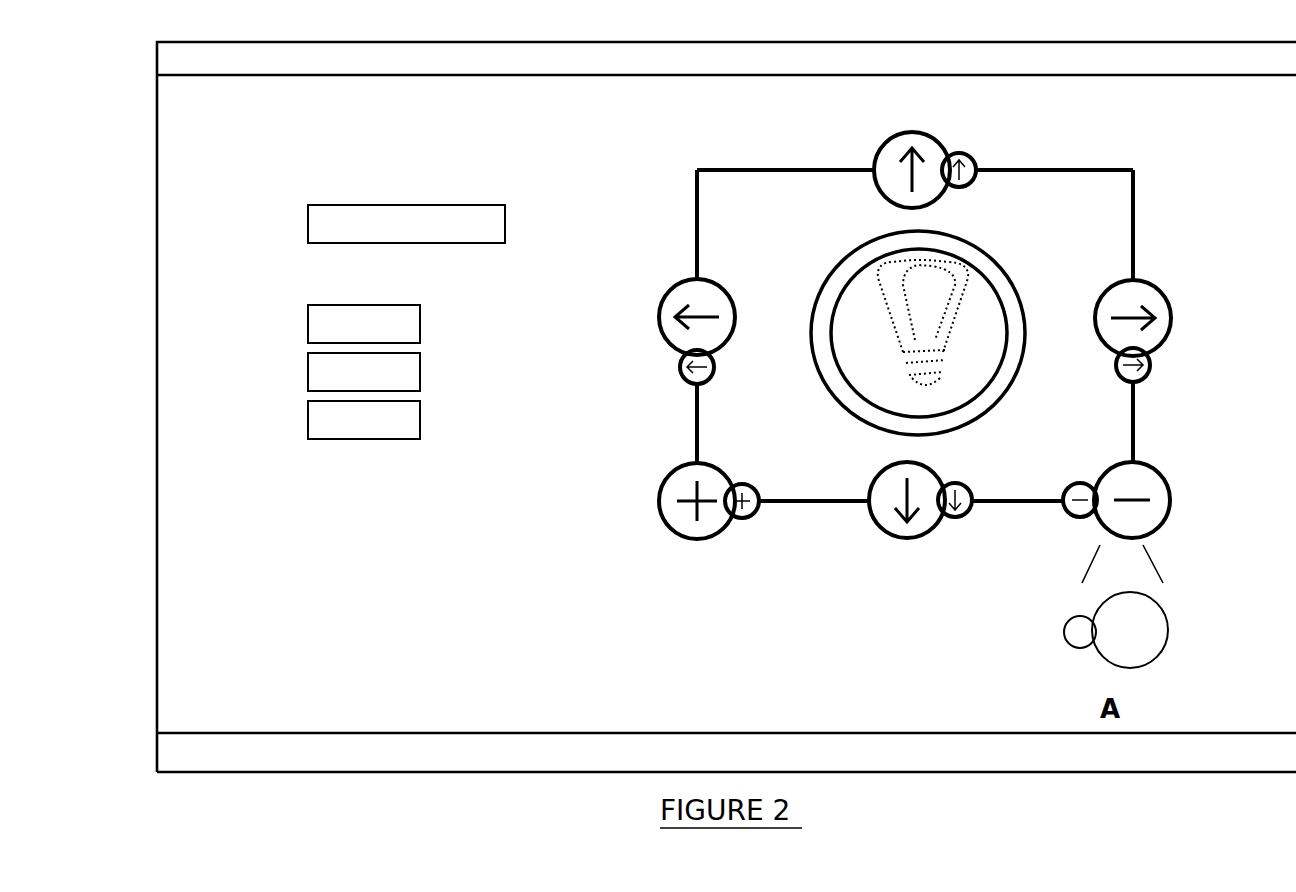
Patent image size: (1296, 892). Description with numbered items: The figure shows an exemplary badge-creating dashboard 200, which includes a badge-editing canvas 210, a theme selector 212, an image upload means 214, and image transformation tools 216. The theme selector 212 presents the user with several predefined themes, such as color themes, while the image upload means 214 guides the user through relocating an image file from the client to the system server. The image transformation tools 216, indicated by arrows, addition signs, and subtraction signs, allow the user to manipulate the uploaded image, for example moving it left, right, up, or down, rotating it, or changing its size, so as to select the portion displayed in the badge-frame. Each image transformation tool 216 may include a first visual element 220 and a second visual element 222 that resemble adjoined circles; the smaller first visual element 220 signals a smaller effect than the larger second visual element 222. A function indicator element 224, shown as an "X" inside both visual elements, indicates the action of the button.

The badge-creating dashboard 200 is at (378, 779).
The badge-editing canvas 210 is at (868, 622).
The theme selector 212 is at (296, 309).
The image upload means 214 is at (296, 216).
The image transformation tools 216 is at (863, 119).
The first visual element 220 is at (1066, 622).
The second visual element 222 is at (1150, 665).
The function indicator element 224 is at (1118, 640).